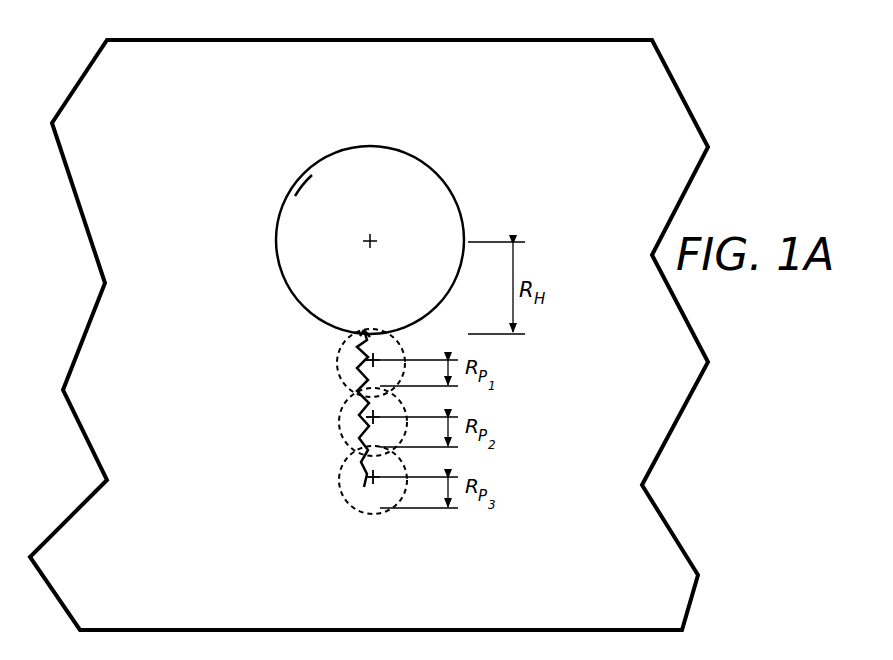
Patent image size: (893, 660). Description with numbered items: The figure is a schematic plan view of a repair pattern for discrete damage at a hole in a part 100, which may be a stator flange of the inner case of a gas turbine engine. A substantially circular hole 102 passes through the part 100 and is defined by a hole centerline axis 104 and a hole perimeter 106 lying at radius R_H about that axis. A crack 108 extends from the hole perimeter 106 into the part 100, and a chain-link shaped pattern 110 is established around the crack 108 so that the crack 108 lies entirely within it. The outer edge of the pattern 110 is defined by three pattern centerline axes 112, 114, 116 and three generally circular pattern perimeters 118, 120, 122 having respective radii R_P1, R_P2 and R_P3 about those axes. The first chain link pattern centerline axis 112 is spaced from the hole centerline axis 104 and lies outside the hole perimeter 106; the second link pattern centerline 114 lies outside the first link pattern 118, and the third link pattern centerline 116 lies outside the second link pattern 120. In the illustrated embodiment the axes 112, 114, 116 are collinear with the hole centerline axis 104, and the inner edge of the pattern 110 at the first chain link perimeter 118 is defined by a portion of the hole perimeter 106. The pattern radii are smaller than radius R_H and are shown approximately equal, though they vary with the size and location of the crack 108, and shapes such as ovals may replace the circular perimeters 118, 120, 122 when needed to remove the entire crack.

The part 100 is at (520, 53).
The hole 102 is at (463, 192).
The hole centerline axis 104 is at (373, 238).
The hole perimeter 106 is at (285, 198).
The crack 108 is at (360, 337).
The chain-link shaped pattern 110 is at (472, 402).
The first chain link pattern centerline axis 112 is at (376, 359).
The second link pattern centerline 114 is at (376, 416).
The third link pattern centerline 116 is at (376, 476).
The first chain link perimeter 118 is at (336, 361).
The second link pattern perimeter 120 is at (338, 421).
The third link pattern perimeter 122 is at (338, 487).